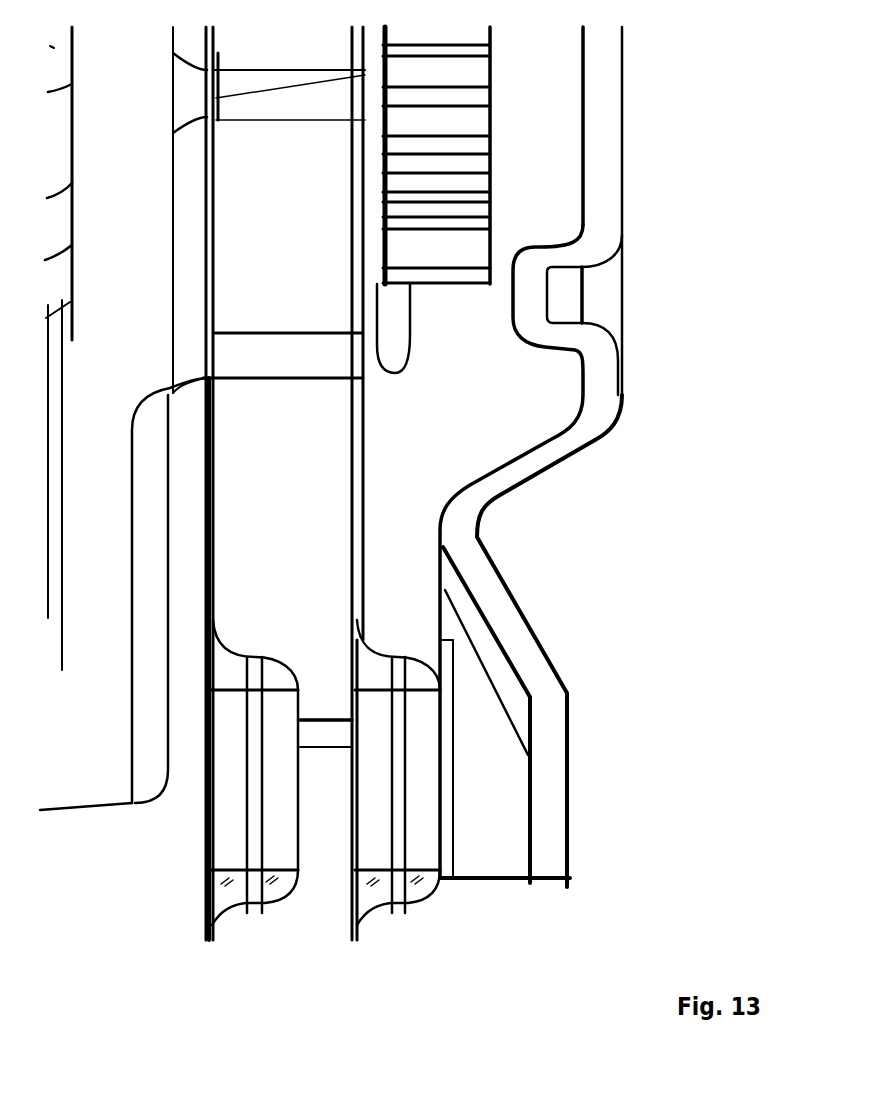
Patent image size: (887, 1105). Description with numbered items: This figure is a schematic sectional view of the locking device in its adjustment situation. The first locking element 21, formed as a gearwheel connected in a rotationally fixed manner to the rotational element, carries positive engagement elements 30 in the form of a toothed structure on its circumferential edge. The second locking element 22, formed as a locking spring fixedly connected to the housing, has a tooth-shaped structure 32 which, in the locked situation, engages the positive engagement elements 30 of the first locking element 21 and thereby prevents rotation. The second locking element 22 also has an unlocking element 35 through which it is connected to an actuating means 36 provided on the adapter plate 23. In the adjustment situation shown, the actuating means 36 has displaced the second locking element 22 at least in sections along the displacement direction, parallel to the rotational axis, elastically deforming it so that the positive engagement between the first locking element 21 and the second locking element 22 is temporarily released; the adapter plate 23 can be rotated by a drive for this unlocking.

The first locking element 21 is at (440, 73).
The second locking element 22 is at (600, 178).
The adapter plate 23 is at (293, 573).
The positive engagement elements 30 is at (442, 243).
The tooth-shaped structure 32 is at (527, 288).
The unlocking element 35 is at (553, 855).
The actuating means 36 is at (410, 893).